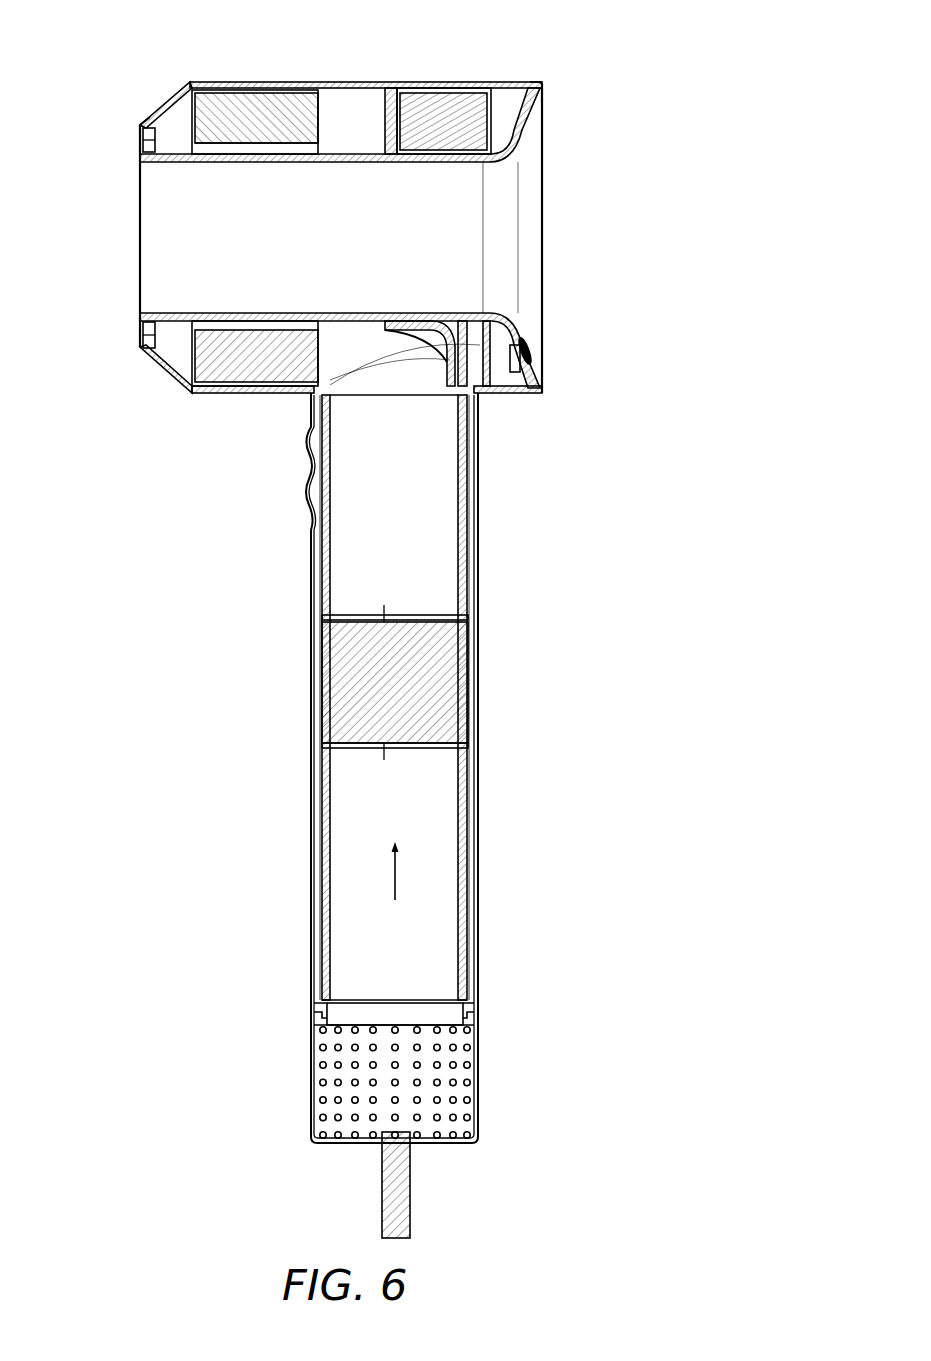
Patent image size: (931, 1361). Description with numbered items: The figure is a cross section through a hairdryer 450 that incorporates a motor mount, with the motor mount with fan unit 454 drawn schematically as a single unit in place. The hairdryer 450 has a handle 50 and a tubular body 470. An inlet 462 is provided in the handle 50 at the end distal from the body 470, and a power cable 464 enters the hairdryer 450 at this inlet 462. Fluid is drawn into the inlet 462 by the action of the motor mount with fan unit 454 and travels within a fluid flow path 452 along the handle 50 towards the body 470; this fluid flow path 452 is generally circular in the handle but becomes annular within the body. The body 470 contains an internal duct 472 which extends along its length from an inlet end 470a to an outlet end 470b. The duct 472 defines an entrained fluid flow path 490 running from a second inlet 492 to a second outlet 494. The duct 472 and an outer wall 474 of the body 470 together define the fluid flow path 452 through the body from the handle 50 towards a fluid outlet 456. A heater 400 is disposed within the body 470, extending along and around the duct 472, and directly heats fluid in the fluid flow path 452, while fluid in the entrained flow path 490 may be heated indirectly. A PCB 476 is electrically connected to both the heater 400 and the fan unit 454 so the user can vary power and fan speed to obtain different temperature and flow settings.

The handle 50 is at (492, 521).
The heater 400 is at (240, 369).
The hairdryer 450 is at (172, 627).
The fluid flow path 452 is at (352, 108).
The motor mount with fan unit 454 is at (378, 695).
The fluid outlet 456 is at (143, 328).
The inlet 462 is at (480, 1140).
The cable 464 is at (405, 1192).
The body 470 is at (432, 62).
The inlet end 470a is at (548, 82).
The outlet end 470b is at (138, 125).
The internal duct 472 is at (377, 163).
The outer wall 474 is at (268, 82).
The PCB 476 is at (423, 131).
The entrained fluid flow path 490 is at (240, 249).
The second inlet 492 is at (532, 238).
The second outlet 494 is at (148, 238).